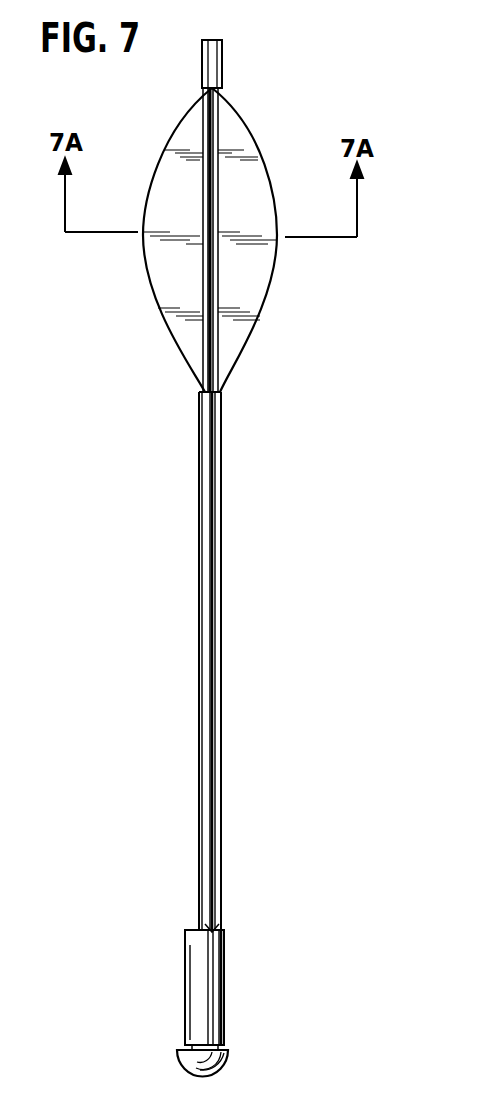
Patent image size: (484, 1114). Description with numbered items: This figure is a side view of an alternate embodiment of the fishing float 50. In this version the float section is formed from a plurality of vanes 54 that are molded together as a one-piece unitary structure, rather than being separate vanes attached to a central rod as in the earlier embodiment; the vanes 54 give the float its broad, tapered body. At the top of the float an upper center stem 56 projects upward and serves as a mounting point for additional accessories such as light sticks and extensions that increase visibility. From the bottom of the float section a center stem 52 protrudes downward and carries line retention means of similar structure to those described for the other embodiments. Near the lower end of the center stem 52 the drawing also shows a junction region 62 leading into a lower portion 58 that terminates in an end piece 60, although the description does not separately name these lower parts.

The float 50 is at (292, 85).
The center stem 52 is at (215, 555).
The vanes 54 is at (255, 170).
The upper center stem 56 is at (218, 60).
The hub 58 is at (222, 970).
The end cap 60 is at (225, 1060).
The junction 62 is at (212, 926).